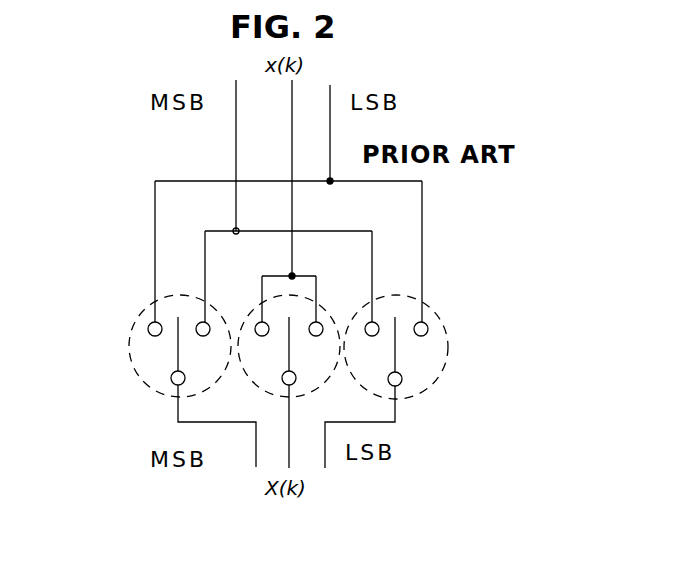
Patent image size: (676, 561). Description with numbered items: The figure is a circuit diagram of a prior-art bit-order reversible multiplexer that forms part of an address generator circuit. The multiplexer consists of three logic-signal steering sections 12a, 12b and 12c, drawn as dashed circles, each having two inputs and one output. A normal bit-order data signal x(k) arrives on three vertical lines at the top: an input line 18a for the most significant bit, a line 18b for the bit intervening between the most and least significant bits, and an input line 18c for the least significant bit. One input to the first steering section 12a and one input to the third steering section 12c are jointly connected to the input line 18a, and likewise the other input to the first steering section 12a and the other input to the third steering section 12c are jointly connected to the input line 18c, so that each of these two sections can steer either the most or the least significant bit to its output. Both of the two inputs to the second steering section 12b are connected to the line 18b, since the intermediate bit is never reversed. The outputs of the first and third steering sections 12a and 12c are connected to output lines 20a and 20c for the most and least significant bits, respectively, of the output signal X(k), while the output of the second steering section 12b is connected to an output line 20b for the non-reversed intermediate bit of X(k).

The first steering section 12a is at (136, 318).
The second steering section 12b is at (248, 315).
The third steering section 12c is at (440, 312).
The input line 18a is at (235, 165).
The line 18b is at (290, 165).
The input line 18c is at (328, 165).
The output line 20a is at (256, 452).
The output line 20b is at (290, 455).
The output line 20c is at (325, 456).